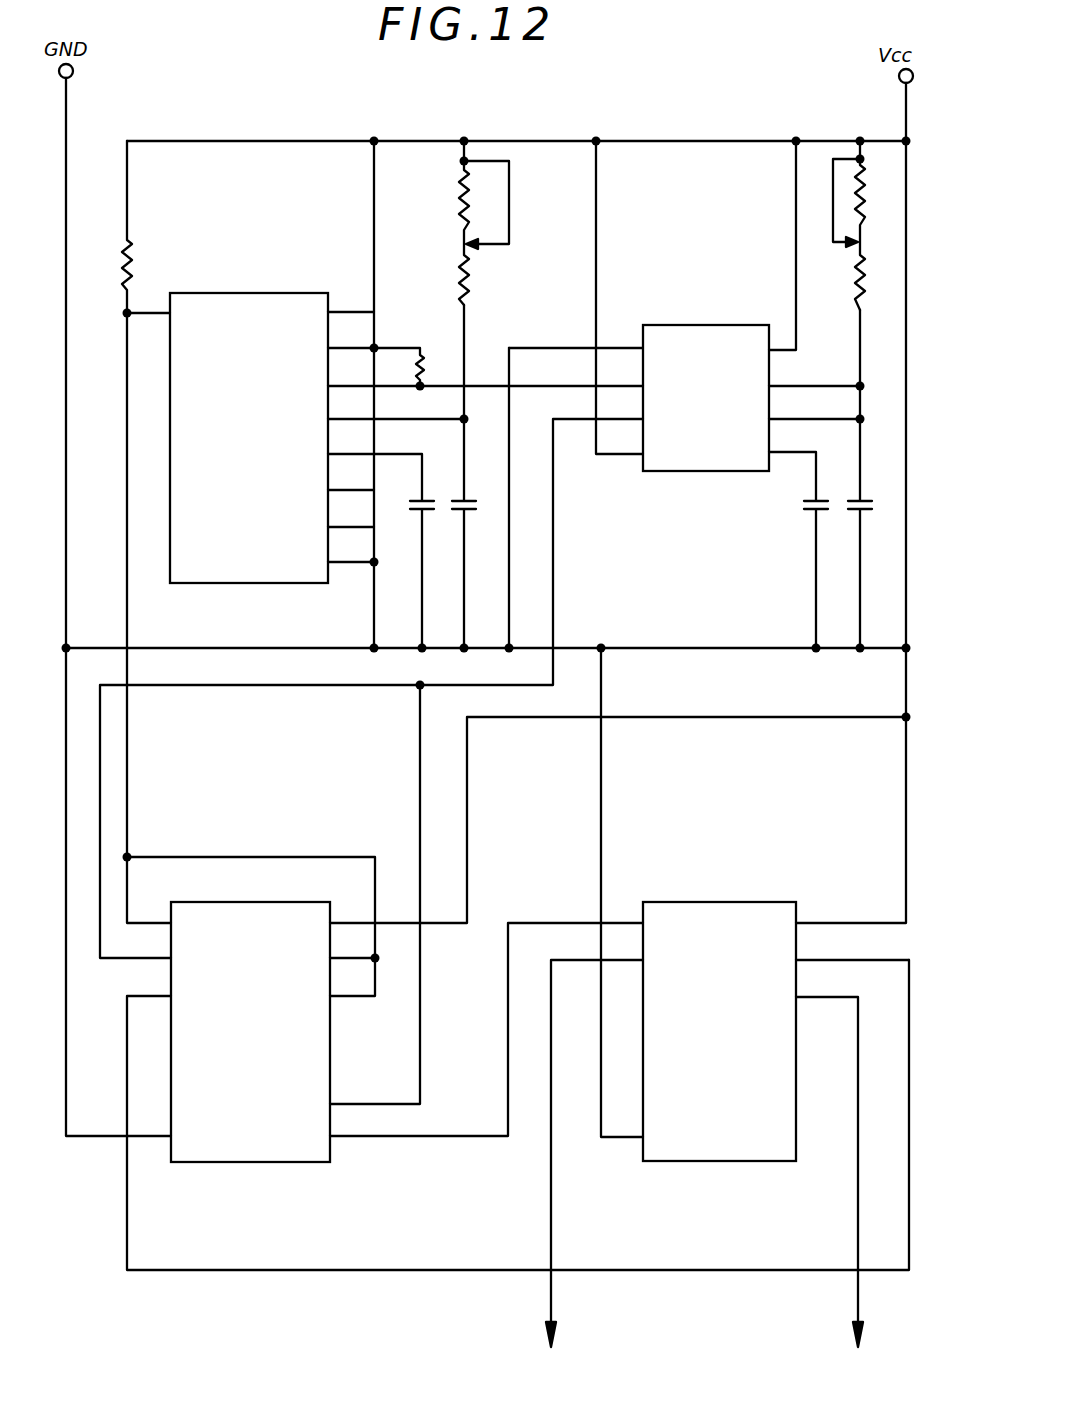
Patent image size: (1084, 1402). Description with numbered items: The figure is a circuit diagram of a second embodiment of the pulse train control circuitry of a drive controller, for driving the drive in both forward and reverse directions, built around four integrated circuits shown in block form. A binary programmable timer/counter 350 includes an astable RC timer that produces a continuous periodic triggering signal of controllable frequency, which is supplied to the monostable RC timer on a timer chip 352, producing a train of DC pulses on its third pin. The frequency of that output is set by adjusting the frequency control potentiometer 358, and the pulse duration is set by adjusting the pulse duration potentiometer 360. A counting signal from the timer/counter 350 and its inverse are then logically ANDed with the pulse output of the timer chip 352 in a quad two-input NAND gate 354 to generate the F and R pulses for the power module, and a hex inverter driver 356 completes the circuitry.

The 2240 binary programmable timer/counter 350 is at (240, 585).
The 555 timer 352 is at (695, 472).
The 7400 Quad 2-input NAND gate 354 is at (250, 1163).
The 7406 Hex Inverter, Driver 356 is at (728, 1162).
The frequency control potentiometer 358 is at (460, 200).
The pulse duration potentiometer 360 is at (841, 158).